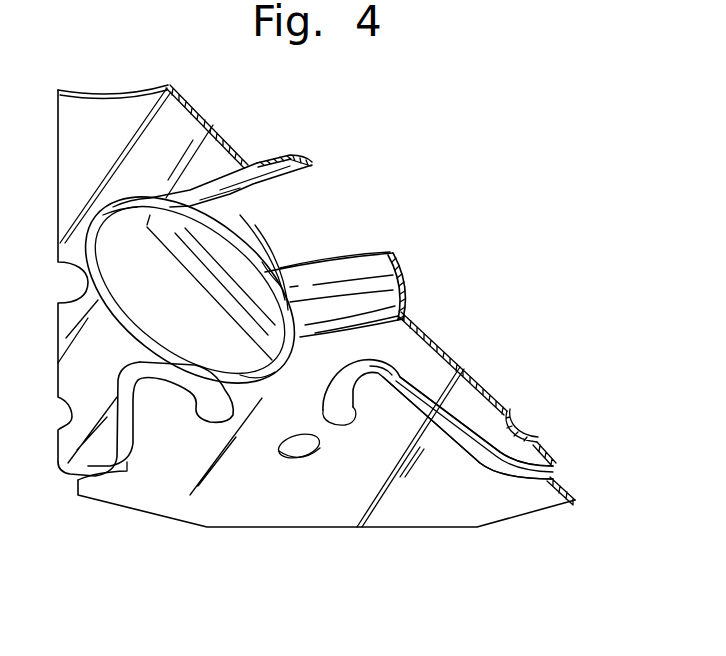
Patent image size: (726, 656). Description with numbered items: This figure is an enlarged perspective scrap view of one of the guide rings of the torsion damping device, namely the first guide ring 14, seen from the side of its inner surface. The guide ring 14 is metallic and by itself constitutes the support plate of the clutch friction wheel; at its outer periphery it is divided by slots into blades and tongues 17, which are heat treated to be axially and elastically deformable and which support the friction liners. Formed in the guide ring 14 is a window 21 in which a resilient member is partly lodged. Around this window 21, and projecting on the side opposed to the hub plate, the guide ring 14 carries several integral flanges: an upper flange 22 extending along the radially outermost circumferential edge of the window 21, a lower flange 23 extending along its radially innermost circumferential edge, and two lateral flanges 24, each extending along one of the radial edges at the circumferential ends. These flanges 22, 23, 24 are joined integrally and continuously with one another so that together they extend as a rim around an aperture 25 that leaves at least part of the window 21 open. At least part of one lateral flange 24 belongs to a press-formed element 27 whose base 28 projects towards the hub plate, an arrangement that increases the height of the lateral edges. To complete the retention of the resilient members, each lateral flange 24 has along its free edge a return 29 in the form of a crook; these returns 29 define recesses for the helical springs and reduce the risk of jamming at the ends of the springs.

The guide ring 14 is at (312, 527).
The blades and tongues 17 is at (148, 495).
The window 21 is at (398, 322).
The upper flange 22 is at (387, 300).
The lower flange 23 is at (300, 172).
The lateral flange 24 is at (262, 273).
The aperture 25 is at (372, 254).
The press-formed element 27 is at (267, 382).
The base 28 is at (182, 314).
The return 29 is at (248, 222).